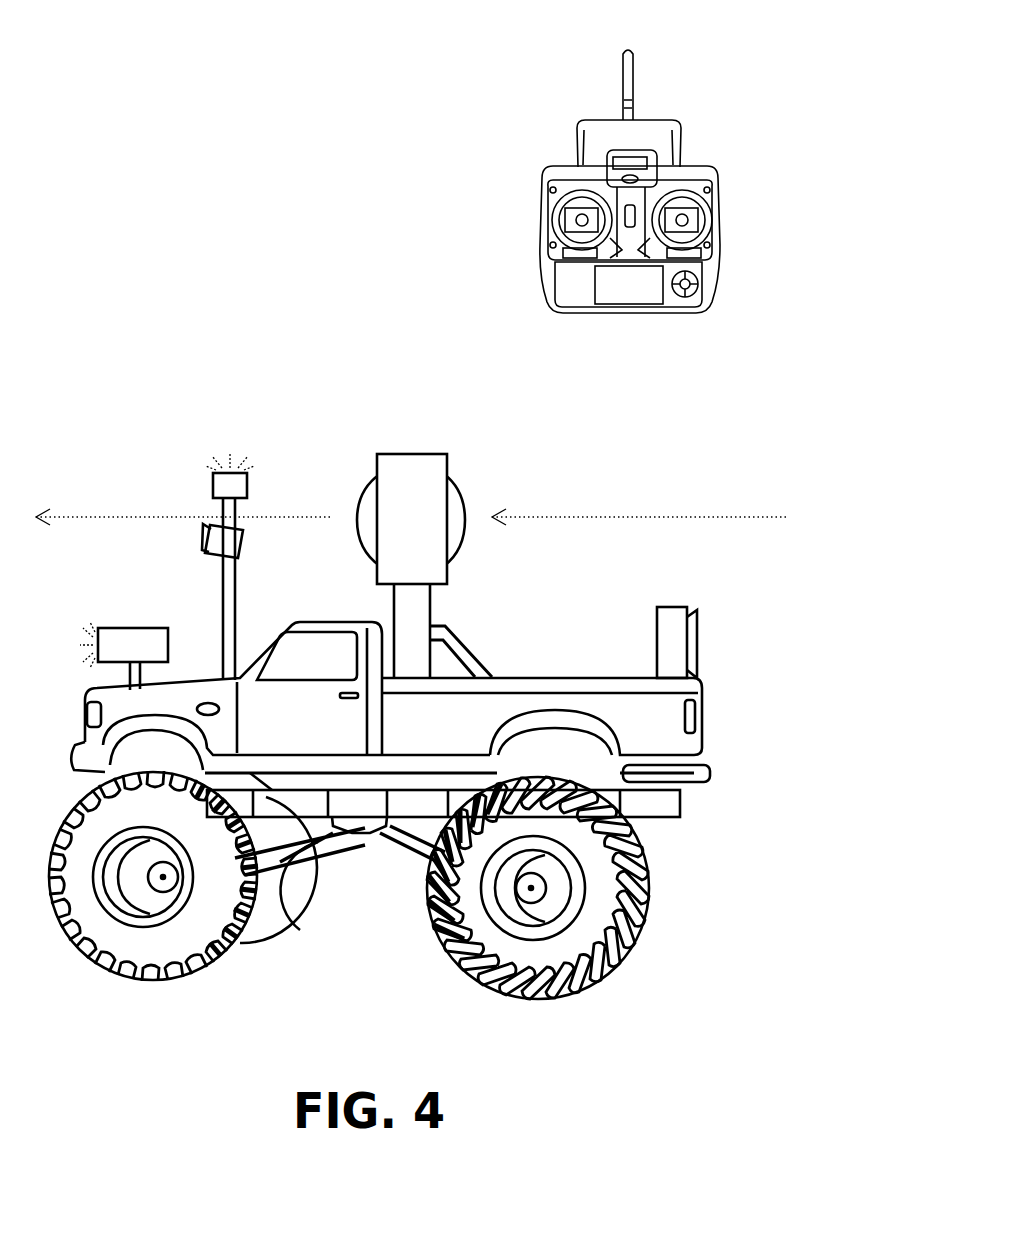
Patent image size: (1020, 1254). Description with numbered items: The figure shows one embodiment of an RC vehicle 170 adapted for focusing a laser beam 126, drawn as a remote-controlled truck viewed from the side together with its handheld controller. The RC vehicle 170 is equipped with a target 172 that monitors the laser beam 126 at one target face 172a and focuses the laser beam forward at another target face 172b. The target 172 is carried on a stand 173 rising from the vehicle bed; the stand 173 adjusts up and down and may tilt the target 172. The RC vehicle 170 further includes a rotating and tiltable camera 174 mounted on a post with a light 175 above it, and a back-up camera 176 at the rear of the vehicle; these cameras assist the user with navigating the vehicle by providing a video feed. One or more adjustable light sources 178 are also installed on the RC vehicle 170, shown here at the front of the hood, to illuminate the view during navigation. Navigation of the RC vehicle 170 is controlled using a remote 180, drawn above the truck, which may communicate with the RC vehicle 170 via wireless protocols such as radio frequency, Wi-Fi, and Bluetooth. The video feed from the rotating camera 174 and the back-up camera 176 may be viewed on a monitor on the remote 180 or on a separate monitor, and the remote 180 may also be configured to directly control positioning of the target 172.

The laser beam 126 is at (118, 517).
The RC vehicle 170 is at (104, 358).
The target 172 is at (412, 452).
The target face 172a is at (463, 480).
The target face 172b is at (363, 483).
The stand 173 is at (432, 608).
The rotating and tiltable camera 174 is at (243, 547).
The light 175 is at (212, 488).
The back-up camera 176 is at (670, 605).
The adjustable light source 178 is at (137, 627).
The remote 180 is at (662, 120).